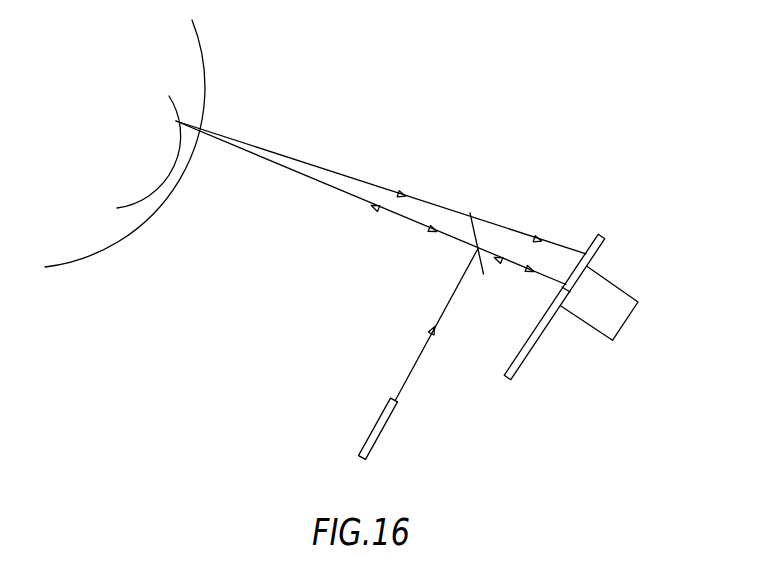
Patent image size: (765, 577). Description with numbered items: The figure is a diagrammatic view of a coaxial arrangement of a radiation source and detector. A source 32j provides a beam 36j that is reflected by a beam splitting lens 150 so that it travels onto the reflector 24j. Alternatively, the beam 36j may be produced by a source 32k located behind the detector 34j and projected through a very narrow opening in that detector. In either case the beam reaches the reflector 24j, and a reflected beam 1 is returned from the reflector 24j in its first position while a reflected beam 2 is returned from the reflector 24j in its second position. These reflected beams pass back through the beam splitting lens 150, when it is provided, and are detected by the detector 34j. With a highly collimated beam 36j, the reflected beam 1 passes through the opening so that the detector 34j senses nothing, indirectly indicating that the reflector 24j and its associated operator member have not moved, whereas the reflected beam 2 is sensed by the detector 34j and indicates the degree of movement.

The reflected beam 1 is at (108, 248).
The reflected beam 2 is at (207, 60).
The reflector 24j is at (173, 135).
The beam 36j is at (390, 212).
The beam splitting lens 150 is at (477, 238).
The source 32j is at (382, 435).
The detector 34j is at (526, 360).
The source 32k is at (640, 302).